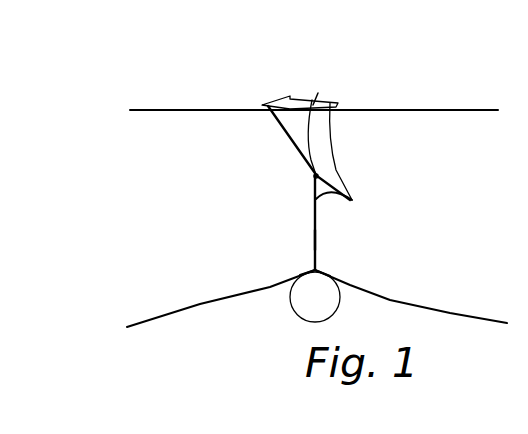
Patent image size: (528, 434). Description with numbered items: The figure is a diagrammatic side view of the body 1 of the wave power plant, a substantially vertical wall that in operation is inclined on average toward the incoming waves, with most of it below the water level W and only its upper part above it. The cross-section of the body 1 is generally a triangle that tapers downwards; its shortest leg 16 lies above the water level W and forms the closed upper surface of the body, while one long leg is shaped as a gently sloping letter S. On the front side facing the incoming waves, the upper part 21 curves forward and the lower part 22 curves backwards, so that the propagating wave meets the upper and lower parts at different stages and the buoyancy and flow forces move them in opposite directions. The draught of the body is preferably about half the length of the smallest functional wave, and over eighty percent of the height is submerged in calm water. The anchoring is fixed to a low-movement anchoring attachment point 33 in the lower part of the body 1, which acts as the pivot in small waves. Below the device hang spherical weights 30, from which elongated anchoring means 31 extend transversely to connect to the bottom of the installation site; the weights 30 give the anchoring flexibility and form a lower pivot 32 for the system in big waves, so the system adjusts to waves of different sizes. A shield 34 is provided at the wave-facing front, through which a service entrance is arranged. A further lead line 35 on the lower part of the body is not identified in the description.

The body 1 is at (323, 144).
The shortest leg 16 is at (317, 95).
The upper part of the front side 21 is at (278, 115).
The lower part of the front side 22 is at (316, 200).
The weights 30 is at (303, 300).
The elongated anchoring means 31 is at (154, 318).
The lower pivot 32 is at (315, 270).
The anchoring attachment point 33 is at (315, 176).
The shield 34 is at (278, 100).
The shaft lower portion 35 is at (315, 238).
The water level W is at (447, 111).